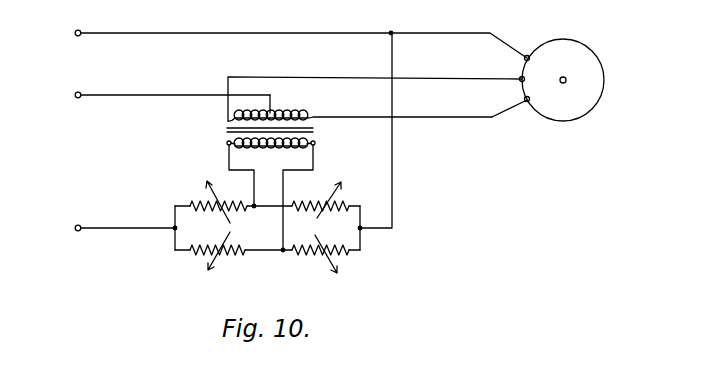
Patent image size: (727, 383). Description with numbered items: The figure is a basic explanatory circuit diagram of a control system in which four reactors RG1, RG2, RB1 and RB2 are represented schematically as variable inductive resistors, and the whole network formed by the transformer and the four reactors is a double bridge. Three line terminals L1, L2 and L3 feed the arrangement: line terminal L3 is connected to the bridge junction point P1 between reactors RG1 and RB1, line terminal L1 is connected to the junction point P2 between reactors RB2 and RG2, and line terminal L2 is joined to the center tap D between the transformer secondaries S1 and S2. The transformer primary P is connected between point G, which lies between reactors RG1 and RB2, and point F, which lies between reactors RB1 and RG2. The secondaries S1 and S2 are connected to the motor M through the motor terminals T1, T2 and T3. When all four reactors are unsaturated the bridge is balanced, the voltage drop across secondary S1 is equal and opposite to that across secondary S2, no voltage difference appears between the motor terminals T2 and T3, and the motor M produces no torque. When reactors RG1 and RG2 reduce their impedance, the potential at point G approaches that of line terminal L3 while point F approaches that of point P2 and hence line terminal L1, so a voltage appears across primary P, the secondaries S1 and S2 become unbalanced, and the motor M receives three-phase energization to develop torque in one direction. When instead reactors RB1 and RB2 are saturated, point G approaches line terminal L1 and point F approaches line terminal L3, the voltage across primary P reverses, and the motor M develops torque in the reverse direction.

The line terminal L1 is at (75, 33).
The line terminal L2 is at (75, 95).
The line terminal L3 is at (75, 228).
The motor terminal T1 is at (526, 55).
The motor terminal T2 is at (519, 78).
The motor terminal T3 is at (524, 99).
The motor M is at (580, 110).
The secondary S1 is at (232, 118).
The secondary S2 is at (311, 116).
The center tap D is at (273, 114).
The point G is at (226, 143).
The point F is at (316, 143).
The primary P is at (274, 149).
The reactor RG1 is at (193, 199).
The reactor RB1 is at (196, 258).
The reactor RB2 is at (314, 199).
The reactor RG2 is at (345, 260).
The point P1 is at (172, 230).
The point P2 is at (363, 230).